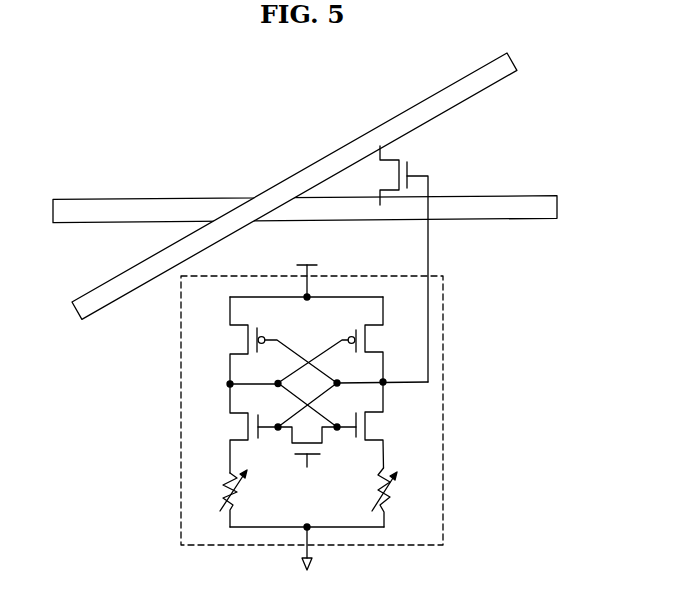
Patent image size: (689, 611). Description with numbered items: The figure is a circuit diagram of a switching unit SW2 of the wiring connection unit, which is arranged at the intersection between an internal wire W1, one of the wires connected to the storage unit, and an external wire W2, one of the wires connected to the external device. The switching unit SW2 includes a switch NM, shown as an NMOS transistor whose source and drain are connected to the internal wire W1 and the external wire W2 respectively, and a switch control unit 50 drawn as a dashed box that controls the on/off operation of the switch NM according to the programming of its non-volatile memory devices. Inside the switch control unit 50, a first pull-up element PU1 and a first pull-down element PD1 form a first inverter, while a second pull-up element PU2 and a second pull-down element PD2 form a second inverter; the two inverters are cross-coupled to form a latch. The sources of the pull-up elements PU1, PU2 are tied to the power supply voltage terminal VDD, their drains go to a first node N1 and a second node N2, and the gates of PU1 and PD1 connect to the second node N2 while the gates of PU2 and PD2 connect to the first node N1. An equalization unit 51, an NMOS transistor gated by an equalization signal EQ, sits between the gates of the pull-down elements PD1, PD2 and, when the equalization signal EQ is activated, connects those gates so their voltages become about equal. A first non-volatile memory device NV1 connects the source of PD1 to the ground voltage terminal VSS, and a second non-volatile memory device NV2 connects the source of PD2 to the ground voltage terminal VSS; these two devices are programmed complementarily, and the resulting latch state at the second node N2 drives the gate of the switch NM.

The switching unit SW2 is at (108, 129).
The internal wire W1 is at (516, 61).
The external wire W2 is at (557, 207).
The switch NM is at (391, 264).
The power supply voltage terminal VDD is at (305, 272).
The first pull-up element PU1 is at (269, 340).
The second pull-up element PU2 is at (348, 340).
The first node N1 is at (243, 384).
The second node N2 is at (381, 375).
The first pull-down element PD1 is at (269, 428).
The second pull-down element PD2 is at (346, 425).
The first non-volatile memory device NV1 is at (218, 498).
The second non-volatile memory device NV2 is at (399, 497).
The equalization signal EQ is at (307, 474).
The equalization unit 51 is at (287, 445).
The switch control unit 50 is at (443, 410).
The ground voltage terminal VSS is at (306, 560).